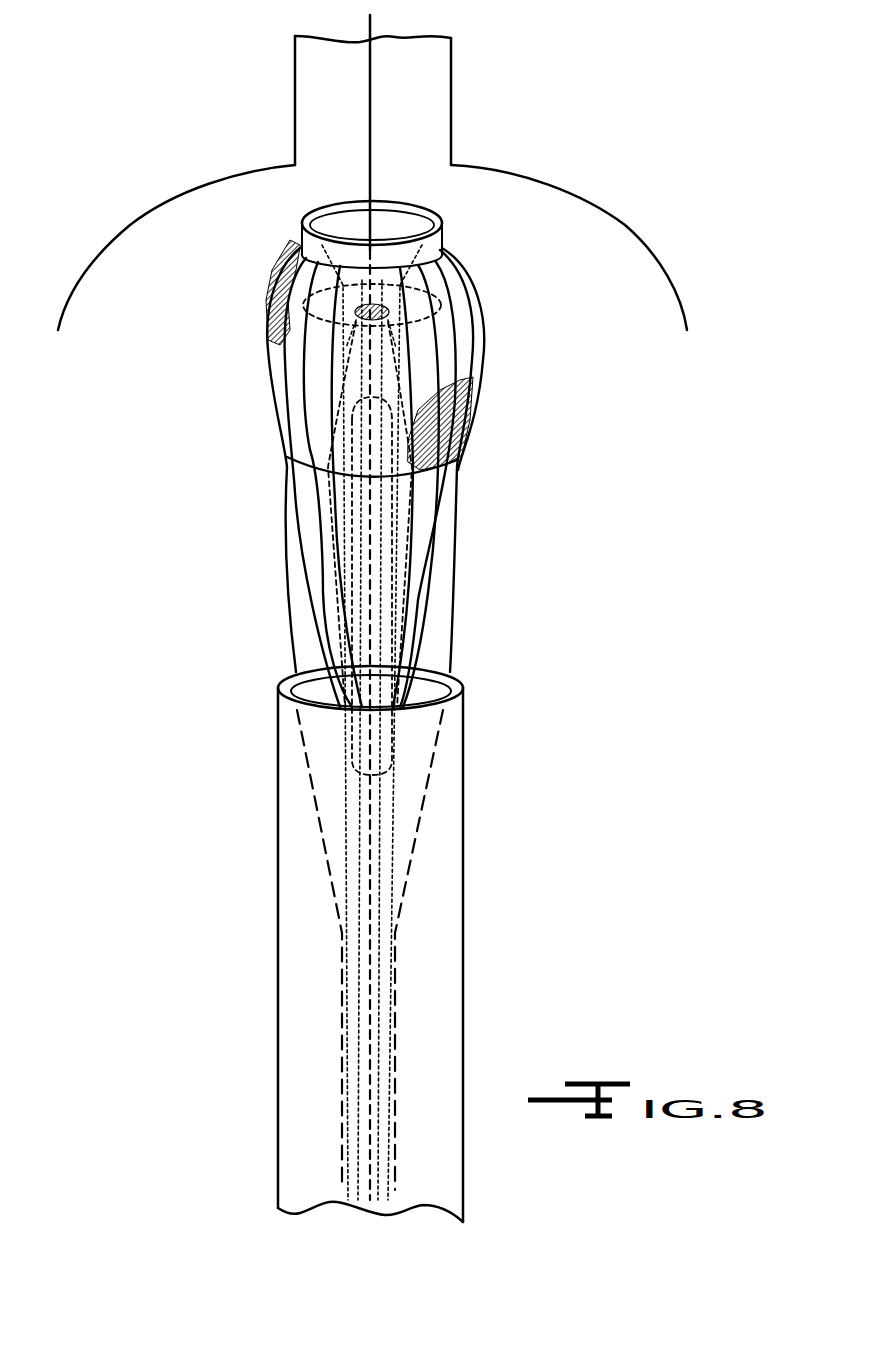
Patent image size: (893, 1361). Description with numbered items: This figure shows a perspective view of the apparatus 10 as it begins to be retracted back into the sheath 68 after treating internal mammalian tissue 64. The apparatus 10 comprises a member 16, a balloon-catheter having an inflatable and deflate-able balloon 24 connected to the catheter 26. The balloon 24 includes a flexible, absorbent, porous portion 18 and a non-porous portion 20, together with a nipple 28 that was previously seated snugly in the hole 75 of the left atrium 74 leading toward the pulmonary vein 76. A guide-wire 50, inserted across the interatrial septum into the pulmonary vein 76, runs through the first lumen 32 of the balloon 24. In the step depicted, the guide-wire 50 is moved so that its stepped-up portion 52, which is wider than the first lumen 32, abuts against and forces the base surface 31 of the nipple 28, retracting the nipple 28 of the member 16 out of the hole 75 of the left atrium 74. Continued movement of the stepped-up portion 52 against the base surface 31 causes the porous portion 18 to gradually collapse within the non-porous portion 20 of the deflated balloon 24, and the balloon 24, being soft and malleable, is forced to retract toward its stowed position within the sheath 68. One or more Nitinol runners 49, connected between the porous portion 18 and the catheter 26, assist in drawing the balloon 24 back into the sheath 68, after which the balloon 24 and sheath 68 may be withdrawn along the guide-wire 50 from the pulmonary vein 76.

The apparatus 10 is at (548, 643).
The member 16 is at (388, 704).
The flexible, absorbent, porous portion 18 is at (480, 322).
The non-porous portion 20 is at (460, 463).
The balloon 24 is at (300, 404).
The catheter 26 is at (395, 1050).
The nipple 28 is at (305, 215).
The base surface 31 is at (393, 330).
The first lumen 32 is at (375, 364).
The Nitinol runners 49 is at (284, 587).
The guide-wire 50 is at (373, 113).
The stepped-up portion 52 is at (373, 310).
The internal mammalian tissue 64 is at (567, 193).
The sheath 68 is at (447, 920).
The left atrium 74 is at (163, 246).
The hole 75 is at (334, 85).
The pulmonary vein 76 is at (295, 72).